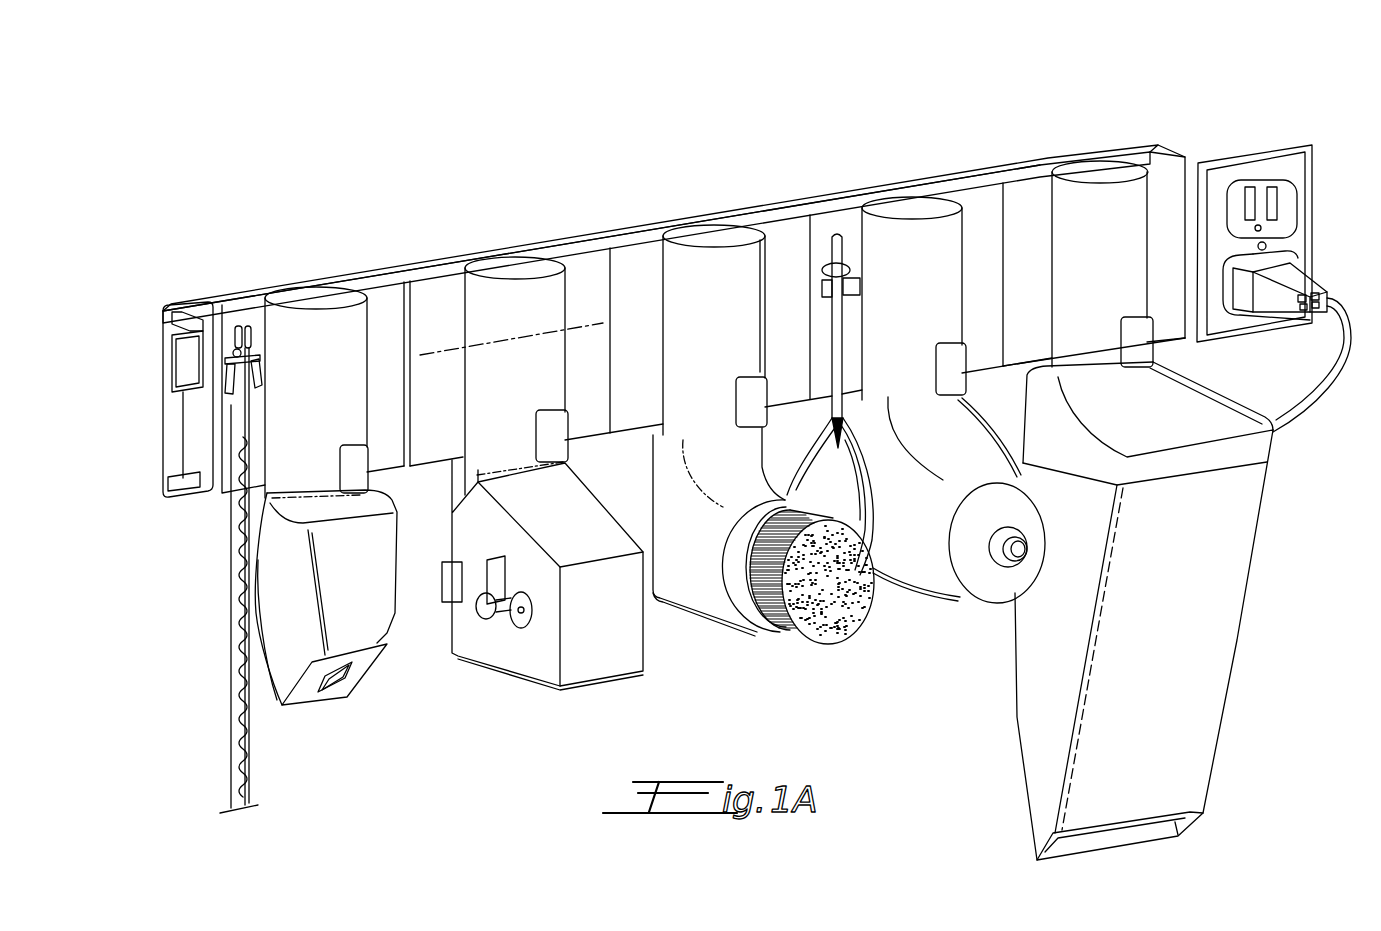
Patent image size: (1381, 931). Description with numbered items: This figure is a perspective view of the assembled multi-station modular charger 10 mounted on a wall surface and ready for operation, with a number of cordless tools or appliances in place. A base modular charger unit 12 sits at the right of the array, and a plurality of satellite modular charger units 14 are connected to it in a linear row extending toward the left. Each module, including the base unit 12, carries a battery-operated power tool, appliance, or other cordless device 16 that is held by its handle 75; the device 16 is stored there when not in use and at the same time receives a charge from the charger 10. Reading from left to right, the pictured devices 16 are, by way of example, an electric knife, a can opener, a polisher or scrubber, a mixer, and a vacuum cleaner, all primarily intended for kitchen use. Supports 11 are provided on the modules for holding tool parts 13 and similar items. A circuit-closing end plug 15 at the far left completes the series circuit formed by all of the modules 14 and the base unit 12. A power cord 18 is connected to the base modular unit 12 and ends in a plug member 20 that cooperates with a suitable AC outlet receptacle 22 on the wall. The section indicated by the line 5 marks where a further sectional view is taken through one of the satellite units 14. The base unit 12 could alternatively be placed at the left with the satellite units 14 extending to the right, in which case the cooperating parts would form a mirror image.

The multi-station modular charger 10 is at (364, 205).
The supports 11 is at (230, 345).
The base modular charger unit 12 is at (1167, 322).
The tool parts 13 is at (232, 707).
The satellite modular charger units 14 is at (218, 301).
The circuit-closing end plug 15 is at (185, 350).
The cordless device 16 is at (293, 655).
The power cord 18 is at (1327, 397).
The plug member 20 is at (1310, 278).
The AC outlet receptacle 22 is at (1297, 217).
The handle 75 is at (318, 318).
The section line for FIG. 5 is at (423, 352).